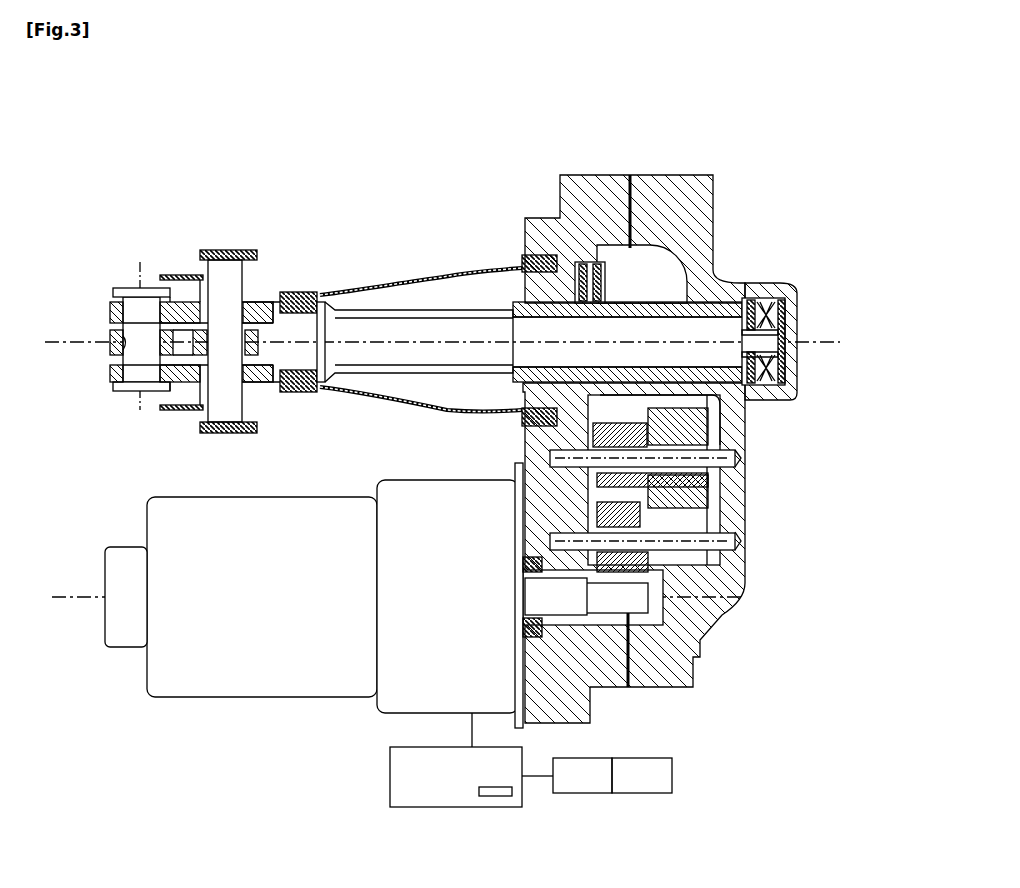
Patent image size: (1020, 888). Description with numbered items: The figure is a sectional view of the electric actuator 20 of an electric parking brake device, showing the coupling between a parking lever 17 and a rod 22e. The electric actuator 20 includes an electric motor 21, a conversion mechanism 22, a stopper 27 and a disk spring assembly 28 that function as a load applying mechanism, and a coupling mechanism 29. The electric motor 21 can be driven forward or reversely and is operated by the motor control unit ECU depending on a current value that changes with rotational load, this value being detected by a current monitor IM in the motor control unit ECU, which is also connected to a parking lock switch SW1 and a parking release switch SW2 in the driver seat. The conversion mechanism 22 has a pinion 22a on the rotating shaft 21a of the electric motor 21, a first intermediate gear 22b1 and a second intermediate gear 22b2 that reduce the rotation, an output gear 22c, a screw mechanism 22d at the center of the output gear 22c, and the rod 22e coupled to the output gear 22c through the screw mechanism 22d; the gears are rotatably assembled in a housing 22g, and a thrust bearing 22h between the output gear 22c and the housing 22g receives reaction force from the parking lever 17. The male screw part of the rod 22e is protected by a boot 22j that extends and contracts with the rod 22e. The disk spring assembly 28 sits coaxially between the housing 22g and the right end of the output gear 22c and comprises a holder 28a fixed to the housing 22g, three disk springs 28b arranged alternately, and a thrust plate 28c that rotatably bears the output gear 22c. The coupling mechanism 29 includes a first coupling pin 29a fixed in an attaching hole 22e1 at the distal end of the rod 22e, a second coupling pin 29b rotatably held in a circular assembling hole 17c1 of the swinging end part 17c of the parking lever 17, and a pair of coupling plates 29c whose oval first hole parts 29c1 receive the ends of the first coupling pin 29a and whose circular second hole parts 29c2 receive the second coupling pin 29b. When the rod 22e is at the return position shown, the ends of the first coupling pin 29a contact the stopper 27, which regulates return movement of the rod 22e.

The electric actuator 20 is at (601, 172).
The electric motor 21 is at (343, 700).
The rotating shaft 21a is at (526, 607).
The conversion mechanism 22 is at (668, 246).
The pinion 22a is at (607, 613).
The first intermediate gear 22b1 is at (680, 598).
The second intermediate gear 22b2 is at (712, 500).
The output gear 22c is at (635, 245).
The screw mechanism 22d is at (524, 265).
The rod 22e is at (412, 352).
The attaching hole 22e1 is at (250, 356).
The housing 22g is at (697, 255).
The thrust bearing 22h is at (555, 426).
The boot 22j is at (441, 277).
The stopper 27 is at (235, 250).
The disk spring assembly 28 is at (793, 407).
The holder 28a is at (786, 320).
The disk springs 28b is at (770, 384).
The thrust plate 28c is at (756, 500).
The coupling mechanism 29 is at (187, 300).
The first coupling pin 29a is at (236, 274).
The second coupling pin 29b is at (135, 303).
The coupling plates 29c is at (110, 307).
The first hole parts 29c1 is at (253, 294).
The second hole parts 29c2 is at (160, 303).
The parking lever 17 is at (186, 392).
The swinging end part 17c is at (110, 338).
The assembling hole 17c1 is at (125, 356).
The motor control unit ECU is at (396, 782).
The current monitor IM is at (497, 796).
The parking lock switch SW1 is at (582, 775).
The parking release switch SW2 is at (642, 775).